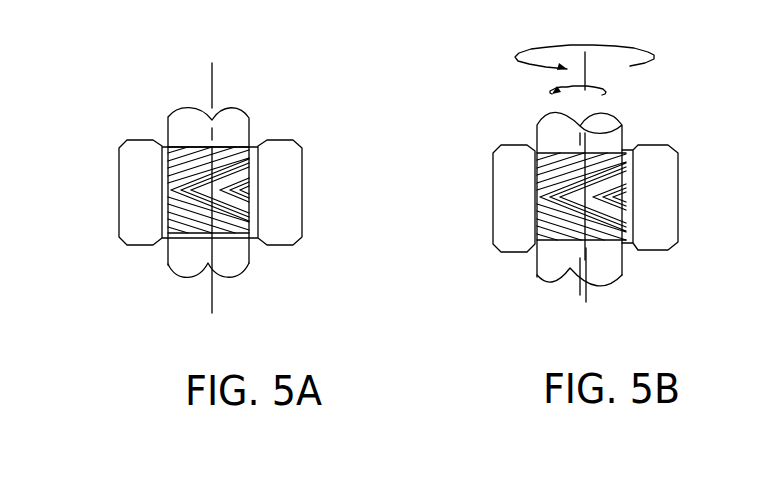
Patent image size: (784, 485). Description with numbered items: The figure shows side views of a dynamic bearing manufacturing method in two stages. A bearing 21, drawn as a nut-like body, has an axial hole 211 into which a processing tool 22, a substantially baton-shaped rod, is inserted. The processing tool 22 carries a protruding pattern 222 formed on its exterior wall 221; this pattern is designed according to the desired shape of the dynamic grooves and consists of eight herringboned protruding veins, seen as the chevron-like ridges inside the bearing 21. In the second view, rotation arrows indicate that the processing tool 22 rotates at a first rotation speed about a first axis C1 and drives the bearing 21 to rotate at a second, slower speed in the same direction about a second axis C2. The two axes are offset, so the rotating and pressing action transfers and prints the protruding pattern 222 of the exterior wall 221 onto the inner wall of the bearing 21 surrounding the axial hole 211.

In FIG. 5A, the bearing 21 is at (130, 138).
In FIG. 5B, the bearing 21 is at (659, 143).
In FIG. 5A, the processing tool 22 is at (262, 158).
In FIG. 5B, the processing tool 22 is at (538, 122).
In FIG. 5A, the axial hole 211 is at (252, 145).
In FIG. 5A, the exterior wall 221 is at (245, 264).
In FIG. 5A, the protruding pattern 222 is at (255, 153).
In FIG. 5B, the first axis C1 is at (580, 292).
In FIG. 5B, the second axis C2 is at (586, 298).